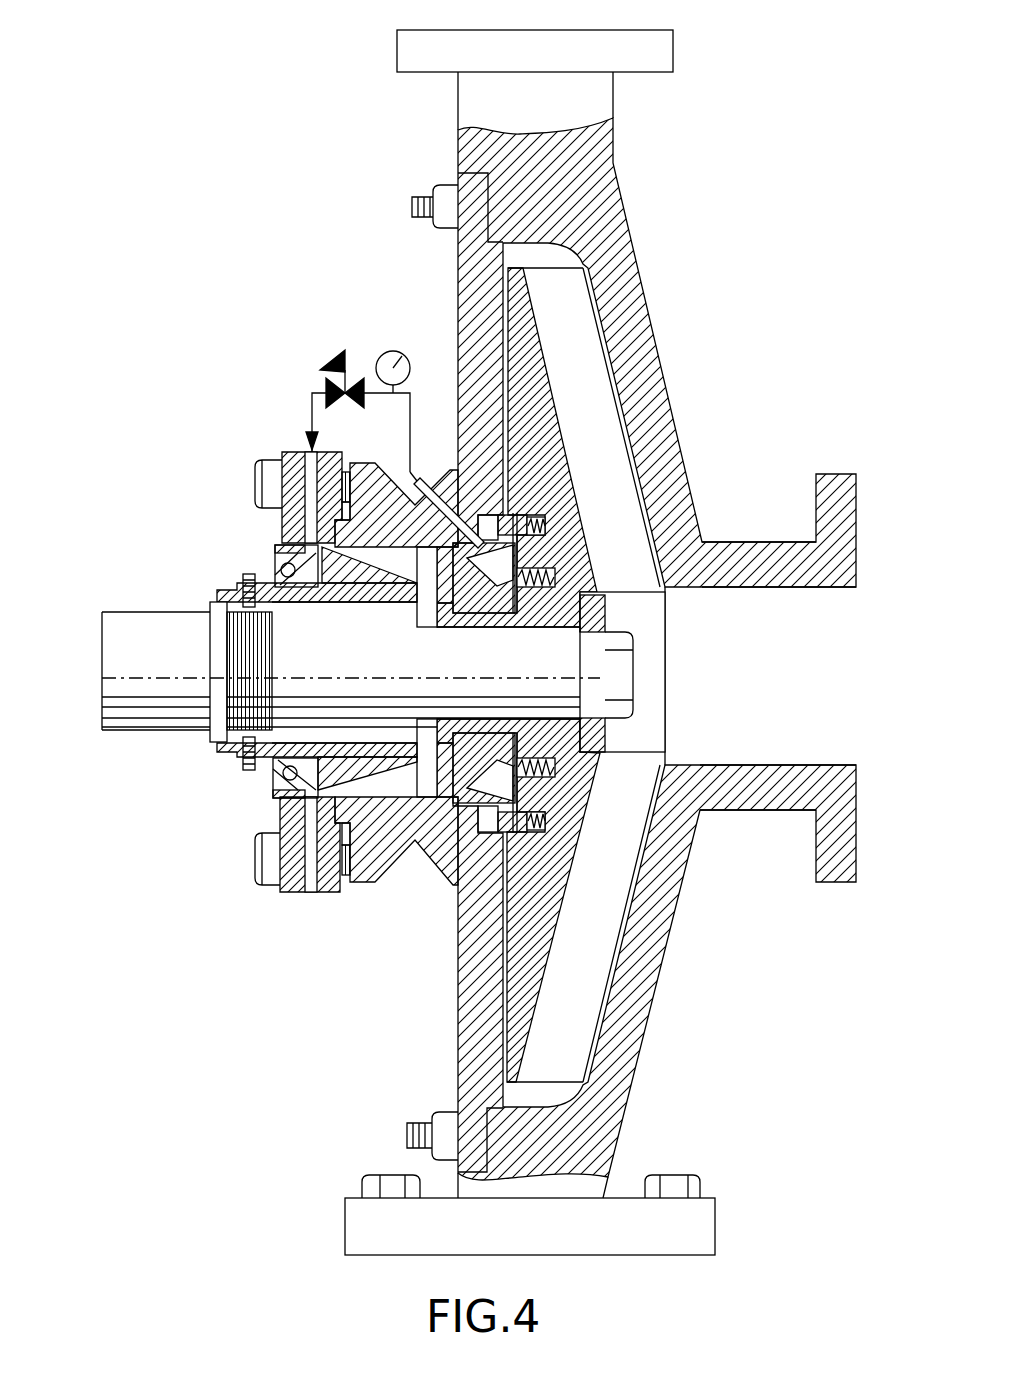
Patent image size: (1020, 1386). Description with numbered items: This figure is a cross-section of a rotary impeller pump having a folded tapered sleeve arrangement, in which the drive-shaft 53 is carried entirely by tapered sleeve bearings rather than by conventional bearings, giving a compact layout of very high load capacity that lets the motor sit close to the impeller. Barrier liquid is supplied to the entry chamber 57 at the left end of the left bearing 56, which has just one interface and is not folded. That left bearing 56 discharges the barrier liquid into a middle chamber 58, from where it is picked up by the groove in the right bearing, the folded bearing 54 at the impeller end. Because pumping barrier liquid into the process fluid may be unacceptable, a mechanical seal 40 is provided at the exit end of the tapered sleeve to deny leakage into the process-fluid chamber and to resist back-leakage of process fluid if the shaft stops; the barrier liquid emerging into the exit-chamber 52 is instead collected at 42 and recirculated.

The mechanical seal 40 is at (506, 840).
The barrier liquid collection point 42 is at (447, 497).
The exit-chamber 52 is at (537, 810).
The drive-shaft 53 is at (146, 612).
The folded bearing 54 is at (453, 822).
The left bearing 56 is at (368, 818).
The entry chamber 57 is at (275, 550).
The middle chamber 58 is at (430, 748).